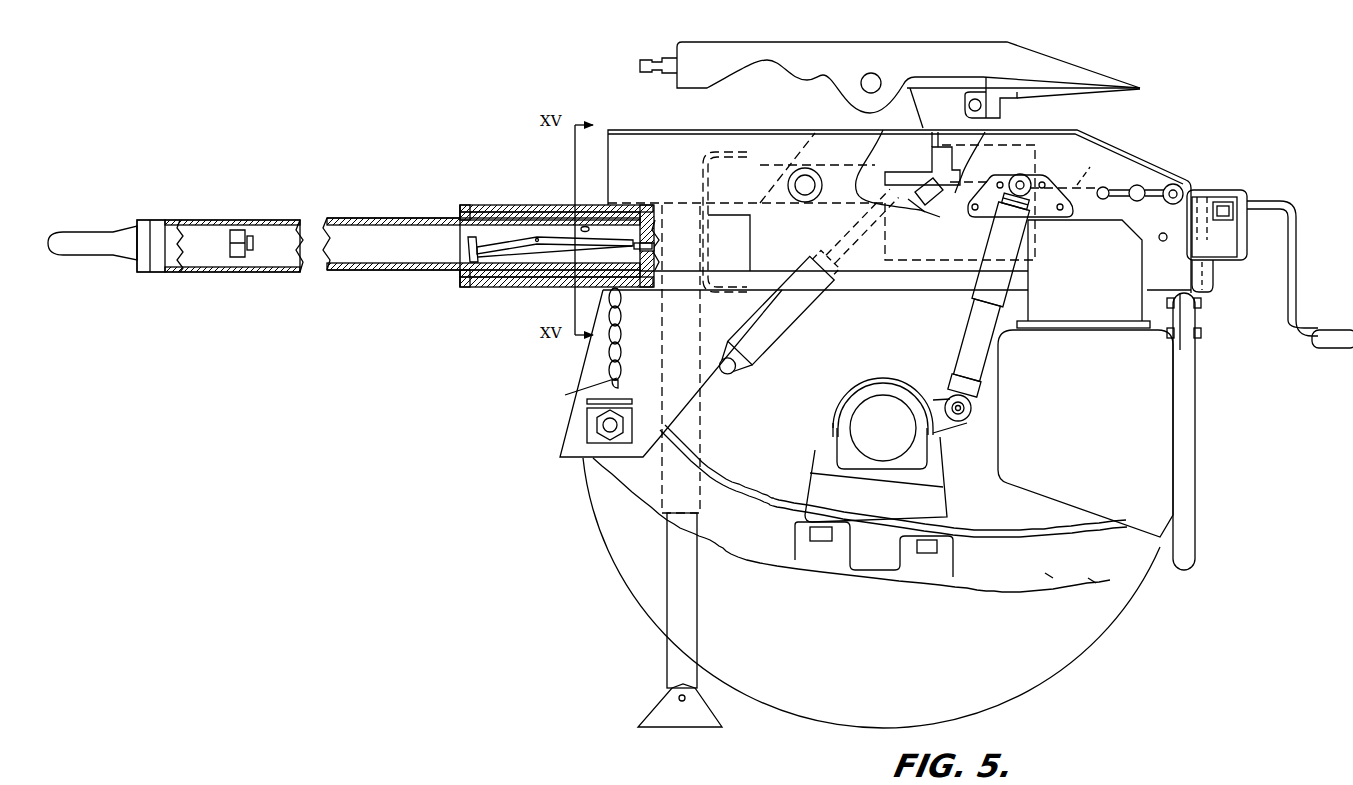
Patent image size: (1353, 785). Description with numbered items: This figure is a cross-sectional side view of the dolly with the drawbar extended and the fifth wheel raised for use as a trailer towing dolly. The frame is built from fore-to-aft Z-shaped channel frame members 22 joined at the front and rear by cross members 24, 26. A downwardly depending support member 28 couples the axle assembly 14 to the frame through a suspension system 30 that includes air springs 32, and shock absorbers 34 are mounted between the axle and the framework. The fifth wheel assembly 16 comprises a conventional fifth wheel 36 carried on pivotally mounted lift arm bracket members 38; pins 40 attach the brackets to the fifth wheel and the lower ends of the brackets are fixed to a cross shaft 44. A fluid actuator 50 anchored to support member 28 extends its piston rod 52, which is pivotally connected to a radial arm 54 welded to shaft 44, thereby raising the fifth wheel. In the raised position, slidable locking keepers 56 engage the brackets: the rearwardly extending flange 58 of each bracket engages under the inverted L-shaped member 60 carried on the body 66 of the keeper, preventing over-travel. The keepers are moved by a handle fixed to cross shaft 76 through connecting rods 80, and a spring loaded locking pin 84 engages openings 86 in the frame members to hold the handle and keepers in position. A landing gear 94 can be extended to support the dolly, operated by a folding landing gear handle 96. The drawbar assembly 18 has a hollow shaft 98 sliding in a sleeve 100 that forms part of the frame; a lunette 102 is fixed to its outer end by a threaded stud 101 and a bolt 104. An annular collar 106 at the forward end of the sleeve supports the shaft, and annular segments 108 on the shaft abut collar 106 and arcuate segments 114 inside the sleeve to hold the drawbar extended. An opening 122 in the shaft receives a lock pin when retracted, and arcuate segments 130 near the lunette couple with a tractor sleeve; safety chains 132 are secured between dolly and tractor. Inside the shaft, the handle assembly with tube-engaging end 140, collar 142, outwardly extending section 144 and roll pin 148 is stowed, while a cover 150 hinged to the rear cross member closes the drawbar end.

The axle assembly 14 is at (876, 430).
The fifth wheel assembly 16 is at (885, 33).
The drawbar assembly 18 is at (130, 205).
The channel frame member 22 is at (1082, 138).
The front cross member 24 is at (712, 153).
The rear cross member 26 is at (1182, 185).
The support member 28 is at (690, 380).
The suspension system 30 is at (875, 584).
The air spring 32 is at (1093, 414).
The shock absorber 34 is at (1008, 262).
The fifth wheel 36 is at (1020, 62).
The lift arm bracket member 38 is at (852, 118).
The pin 40 is at (870, 78).
The cross shaft 44 is at (808, 183).
The fluid actuator 50 is at (790, 315).
The piston rod 52 is at (880, 246).
The radial arm 54 is at (872, 190).
The locking keeper 56 is at (968, 153).
The rearwardly extending flange 58 is at (930, 170).
The inverted L-shaped member 60 is at (930, 160).
The keeper body 66 is at (930, 178).
The cross shaft 76 is at (1210, 198).
The connecting rod 80 is at (1075, 185).
The spring loaded locking pin 84 is at (1142, 188).
The opening 86 is at (1158, 238).
The landing gear 94 is at (686, 602).
The landing gear handle 96 is at (1298, 282).
The drawbar shaft 98 is at (172, 268).
The sleeve 100 is at (490, 207).
The threaded stud 101 is at (255, 238).
The lunette 102 is at (68, 248).
The bolt 104 is at (237, 258).
The annular collar 106 is at (462, 212).
The annular segment 108 is at (570, 213).
The arcuate segment 114 is at (612, 206).
The opening 122 is at (585, 226).
The arcuate segment 130 is at (150, 240).
The safety chain 132 is at (595, 366).
The tube-engaging end 140 is at (500, 258).
The collar 142 is at (468, 250).
The outwardly extending section 144 is at (590, 250).
The roll pin 148 is at (652, 246).
The cover 150 is at (1213, 285).